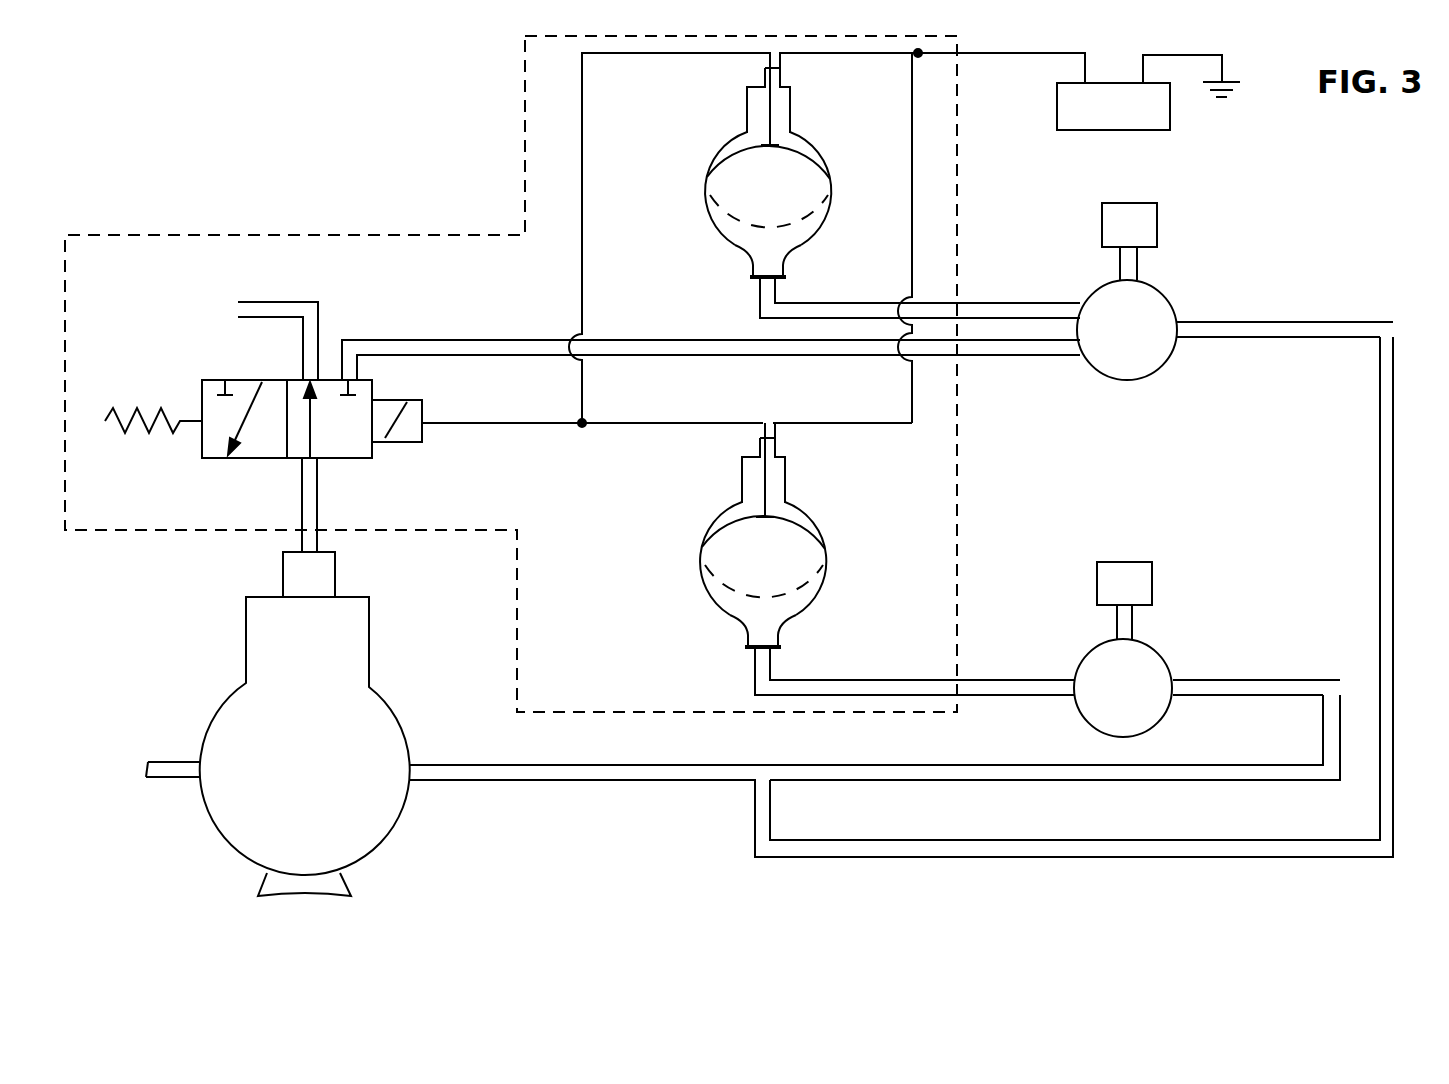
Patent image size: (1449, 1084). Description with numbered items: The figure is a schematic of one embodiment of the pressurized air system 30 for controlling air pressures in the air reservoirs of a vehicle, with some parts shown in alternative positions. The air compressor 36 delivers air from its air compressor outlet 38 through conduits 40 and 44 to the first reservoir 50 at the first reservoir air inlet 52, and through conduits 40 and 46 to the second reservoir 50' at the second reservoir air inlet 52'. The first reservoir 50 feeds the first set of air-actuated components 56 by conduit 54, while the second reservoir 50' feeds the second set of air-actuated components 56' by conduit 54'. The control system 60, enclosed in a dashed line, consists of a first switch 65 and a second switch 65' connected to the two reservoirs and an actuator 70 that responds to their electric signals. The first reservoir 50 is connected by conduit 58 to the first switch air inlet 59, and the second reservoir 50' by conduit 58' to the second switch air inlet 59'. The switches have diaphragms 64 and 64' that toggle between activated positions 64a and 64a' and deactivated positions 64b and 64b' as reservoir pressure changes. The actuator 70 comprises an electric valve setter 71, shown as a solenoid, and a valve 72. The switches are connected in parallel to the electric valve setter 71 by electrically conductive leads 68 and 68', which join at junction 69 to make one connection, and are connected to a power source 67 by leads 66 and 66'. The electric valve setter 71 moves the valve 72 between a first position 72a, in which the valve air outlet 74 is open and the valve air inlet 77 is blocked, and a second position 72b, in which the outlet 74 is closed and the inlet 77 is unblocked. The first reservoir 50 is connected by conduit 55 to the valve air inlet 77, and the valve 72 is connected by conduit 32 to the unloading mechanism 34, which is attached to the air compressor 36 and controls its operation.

The pressurized air system 30 is at (243, 117).
The control system 60 is at (508, 143).
The actuator 70 is at (157, 323).
The valve 72 is at (186, 396).
The first position 72a is at (377, 462).
The second position 72b is at (200, 460).
The electric valve setter 71 is at (428, 445).
The valve air outlet 74 is at (300, 378).
The valve air inlet 77 is at (360, 379).
The conduit 55 is at (472, 338).
The conduit 32 is at (298, 512).
The unloading mechanism 34 is at (282, 578).
The air compressor 36 is at (246, 658).
The air compressor outlet 38 is at (416, 763).
The conduit 40 is at (510, 782).
The conduit 44 is at (1277, 320).
The conduit 46 is at (1262, 680).
The junction 69 is at (578, 427).
The electrically conductive lead 68 is at (674, 238).
The electrically conductive lead 66 is at (932, 236).
The power source 67 is at (1172, 118).
The diaphragm 64 is at (733, 165).
The activated position 64a is at (806, 146).
The deactivated position 64b is at (800, 248).
The first switch 65 is at (680, 250).
The first switch air inlet 59 is at (822, 300).
The conduit 58 is at (1024, 284).
The electrically conductive lead 68' is at (714, 446).
The electrically conductive lead 66' is at (811, 439).
The diaphragm 64' is at (735, 542).
The activated position 64a' is at (794, 518).
The deactivated position 64b' is at (796, 613).
The second switch 65' is at (674, 614).
The second switch air inlet 59' is at (817, 677).
The conduit 58' is at (1017, 660).
The first reservoir 50 is at (1115, 351).
The first reservoir air inlet 52 is at (1207, 310).
The conduit 54 is at (1161, 263).
The first set of air-actuated components 56 is at (1161, 216).
The second reservoir 50' is at (1096, 697).
The second reservoir air inlet 52' is at (1205, 667).
The conduit 54' is at (1092, 625).
The second set of air-actuated components 56' is at (1160, 574).